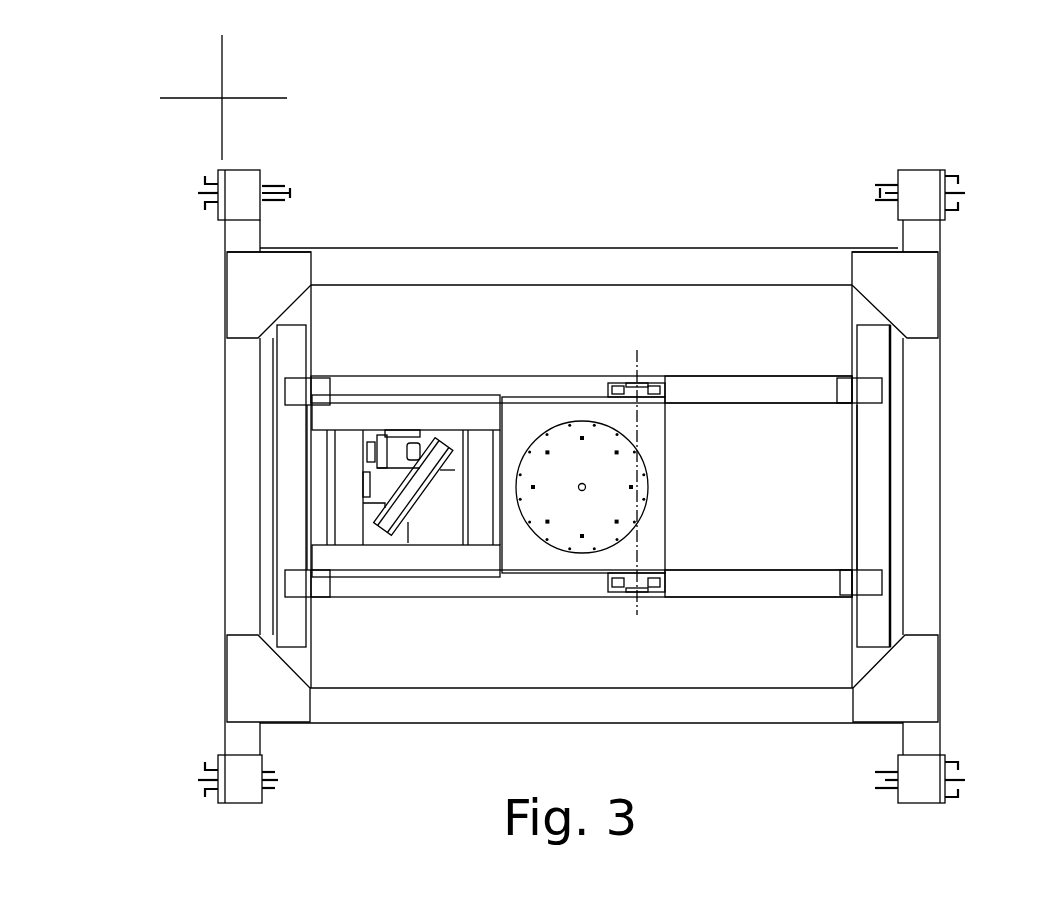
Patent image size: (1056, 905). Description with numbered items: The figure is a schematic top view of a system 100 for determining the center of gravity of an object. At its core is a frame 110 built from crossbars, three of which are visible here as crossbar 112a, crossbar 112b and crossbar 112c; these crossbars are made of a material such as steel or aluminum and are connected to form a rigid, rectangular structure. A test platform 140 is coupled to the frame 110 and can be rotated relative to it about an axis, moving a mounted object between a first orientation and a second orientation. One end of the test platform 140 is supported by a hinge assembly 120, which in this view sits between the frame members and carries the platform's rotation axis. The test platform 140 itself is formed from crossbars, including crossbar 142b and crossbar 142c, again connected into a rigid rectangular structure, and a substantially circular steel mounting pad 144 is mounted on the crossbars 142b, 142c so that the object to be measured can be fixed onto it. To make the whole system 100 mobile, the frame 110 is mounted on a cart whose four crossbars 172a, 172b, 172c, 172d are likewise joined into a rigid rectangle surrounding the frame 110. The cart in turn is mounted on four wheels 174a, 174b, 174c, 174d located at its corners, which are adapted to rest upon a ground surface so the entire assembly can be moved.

The system 100 is at (530, 419).
The frame 110 is at (374, 346).
The crossbar 112a is at (872, 458).
The crossbar 112b is at (442, 390).
The crossbar 112c is at (362, 580).
The hinge assembly 120 is at (528, 361).
The test platform 140 is at (681, 458).
The crossbar 142b is at (785, 395).
The crossbar 142c is at (722, 575).
The mounting pad 144 is at (628, 505).
The crossbar 172a is at (925, 490).
The crossbar 172b is at (737, 270).
The crossbar 172c is at (565, 708).
The crossbar 172d is at (238, 742).
The wheel 174a is at (895, 788).
The wheel 174b is at (878, 186).
The wheel 174c is at (262, 784).
The wheel 174d is at (286, 190).